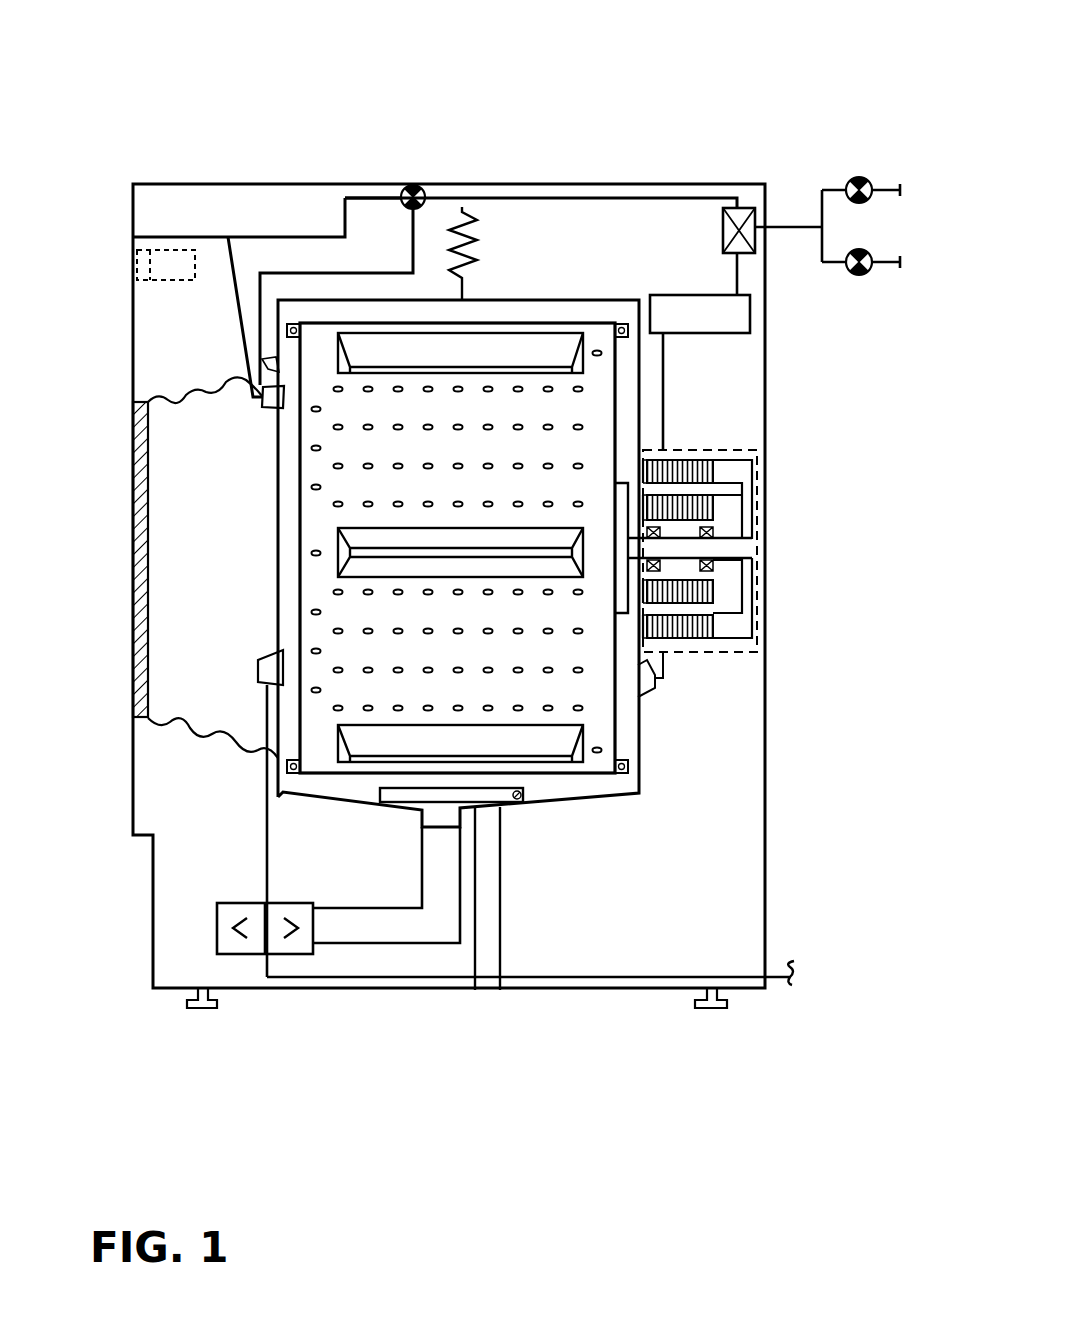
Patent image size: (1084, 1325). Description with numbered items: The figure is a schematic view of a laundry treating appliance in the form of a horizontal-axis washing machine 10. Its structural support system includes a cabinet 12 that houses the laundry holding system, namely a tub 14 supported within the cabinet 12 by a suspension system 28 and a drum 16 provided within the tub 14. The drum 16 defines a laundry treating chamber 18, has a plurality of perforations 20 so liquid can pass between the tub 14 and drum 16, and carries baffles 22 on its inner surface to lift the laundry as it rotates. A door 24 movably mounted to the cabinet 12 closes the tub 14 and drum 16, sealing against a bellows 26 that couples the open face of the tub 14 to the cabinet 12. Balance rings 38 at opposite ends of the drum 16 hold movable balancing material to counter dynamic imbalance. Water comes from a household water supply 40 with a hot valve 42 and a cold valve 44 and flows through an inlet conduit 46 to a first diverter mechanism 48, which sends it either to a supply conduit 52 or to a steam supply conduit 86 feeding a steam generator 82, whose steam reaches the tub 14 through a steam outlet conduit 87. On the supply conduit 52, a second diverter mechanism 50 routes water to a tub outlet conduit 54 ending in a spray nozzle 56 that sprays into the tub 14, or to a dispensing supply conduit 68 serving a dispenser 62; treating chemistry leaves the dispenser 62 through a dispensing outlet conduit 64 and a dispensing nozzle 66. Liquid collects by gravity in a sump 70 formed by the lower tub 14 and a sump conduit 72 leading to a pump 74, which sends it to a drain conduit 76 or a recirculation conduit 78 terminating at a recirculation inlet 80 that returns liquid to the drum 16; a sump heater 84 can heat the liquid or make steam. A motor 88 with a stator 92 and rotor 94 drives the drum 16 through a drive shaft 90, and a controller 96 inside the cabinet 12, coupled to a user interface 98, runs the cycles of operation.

The washing machine 10 is at (681, 26).
The cabinet 12 is at (676, 180).
The tub 14 is at (498, 298).
The drum 16 is at (368, 238).
The laundry treating chamber 18 is at (432, 460).
The perforations 20 is at (583, 427).
The baffles 22 is at (580, 748).
The door 24 is at (135, 537).
The bellows 26 is at (178, 722).
The suspension system 28 is at (450, 235).
The balance ring 38 is at (290, 777).
The household water supply 40 is at (888, 170).
The valve 42 is at (866, 175).
The valve 44 is at (863, 275).
The inlet conduit 46 is at (788, 226).
The first diverter mechanism 48 is at (746, 207).
The second diverter mechanism 50 is at (404, 185).
The supply conduit 52 is at (600, 197).
The tub outlet conduit 54 is at (322, 238).
The spray nozzle 56 is at (278, 376).
The dispenser 62 is at (281, 212).
The dispensing outlet conduit 64 is at (235, 297).
The dispensing nozzle 66 is at (263, 400).
The dispensing supply conduit 68 is at (382, 196).
The sump 70 is at (512, 816).
The sump conduit 72 is at (437, 920).
The pump 74 is at (243, 962).
The drain conduit 76 is at (780, 980).
The recirculation conduit 78 is at (267, 837).
The recirculation inlet 80 is at (258, 668).
The steam generator 82 is at (752, 316).
The sump heater 84 is at (535, 800).
The steam supply conduit 86 is at (740, 262).
The steam outlet conduit 87 is at (665, 672).
The motor 88 is at (760, 451).
The drive shaft 90 is at (724, 552).
The stator 92 is at (706, 463).
The rotor 94 is at (708, 500).
The controller 96 is at (172, 291).
The user interface 98 is at (128, 265).